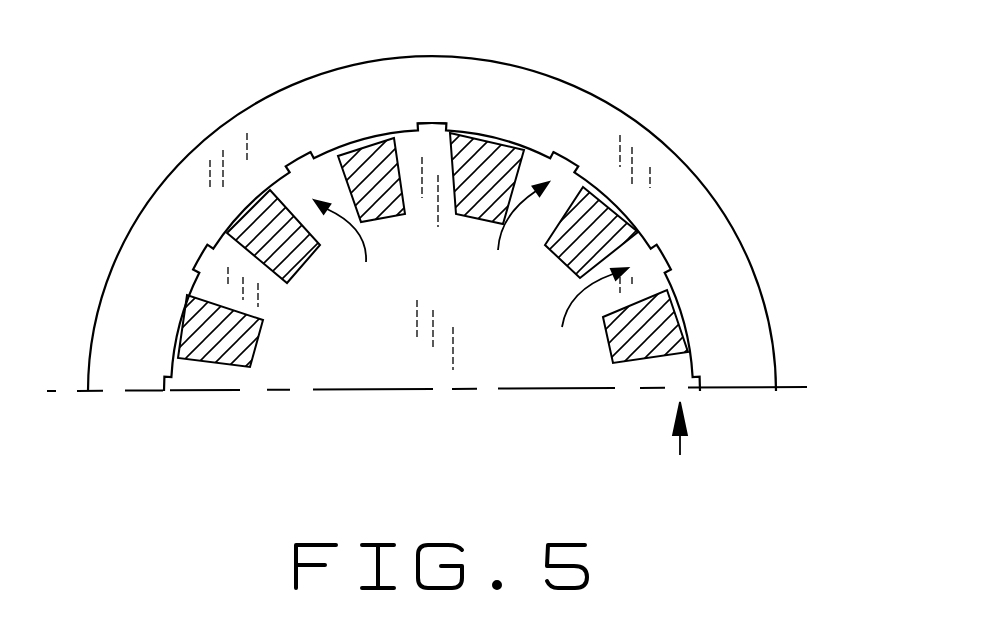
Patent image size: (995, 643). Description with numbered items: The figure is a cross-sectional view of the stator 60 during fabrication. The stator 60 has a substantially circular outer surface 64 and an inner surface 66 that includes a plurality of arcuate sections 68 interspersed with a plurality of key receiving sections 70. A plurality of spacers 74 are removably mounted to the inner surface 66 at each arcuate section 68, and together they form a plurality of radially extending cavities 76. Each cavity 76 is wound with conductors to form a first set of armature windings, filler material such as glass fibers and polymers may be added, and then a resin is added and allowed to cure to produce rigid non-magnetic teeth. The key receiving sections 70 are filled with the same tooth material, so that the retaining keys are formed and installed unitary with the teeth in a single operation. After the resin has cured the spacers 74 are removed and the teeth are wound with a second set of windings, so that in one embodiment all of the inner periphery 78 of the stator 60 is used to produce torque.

The stator 60 is at (740, 233).
The outer surface 64 is at (610, 102).
The inner surface 66 is at (442, 136).
The arcuate sections 68 is at (367, 133).
The key receiving sections 70 is at (430, 126).
The spacers 74 is at (292, 268).
The cavities 76 is at (471, 272).
The inner periphery 78 is at (680, 455).